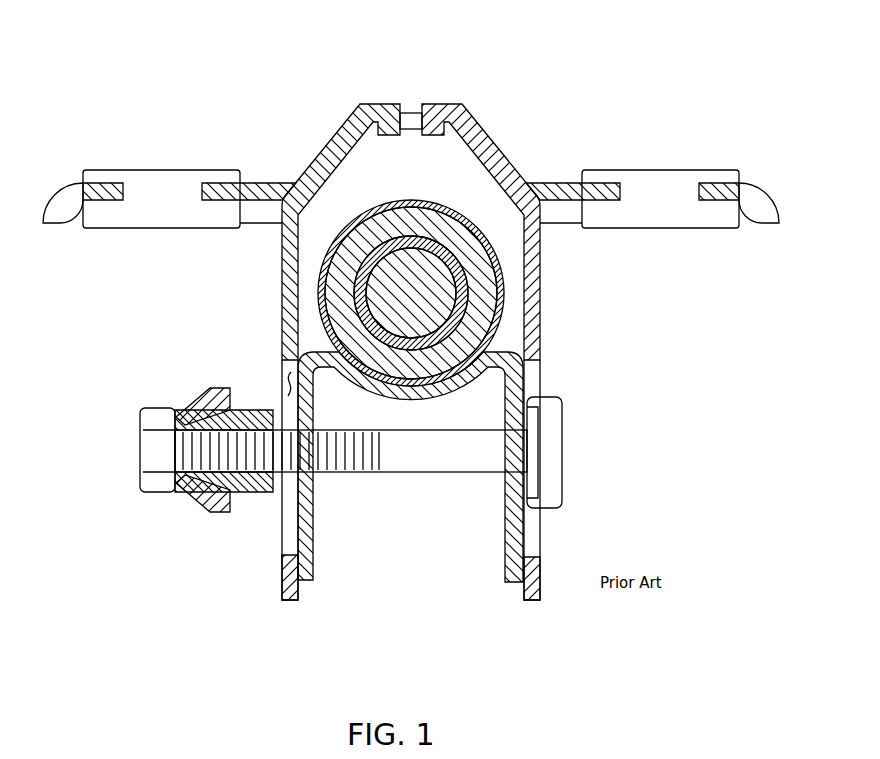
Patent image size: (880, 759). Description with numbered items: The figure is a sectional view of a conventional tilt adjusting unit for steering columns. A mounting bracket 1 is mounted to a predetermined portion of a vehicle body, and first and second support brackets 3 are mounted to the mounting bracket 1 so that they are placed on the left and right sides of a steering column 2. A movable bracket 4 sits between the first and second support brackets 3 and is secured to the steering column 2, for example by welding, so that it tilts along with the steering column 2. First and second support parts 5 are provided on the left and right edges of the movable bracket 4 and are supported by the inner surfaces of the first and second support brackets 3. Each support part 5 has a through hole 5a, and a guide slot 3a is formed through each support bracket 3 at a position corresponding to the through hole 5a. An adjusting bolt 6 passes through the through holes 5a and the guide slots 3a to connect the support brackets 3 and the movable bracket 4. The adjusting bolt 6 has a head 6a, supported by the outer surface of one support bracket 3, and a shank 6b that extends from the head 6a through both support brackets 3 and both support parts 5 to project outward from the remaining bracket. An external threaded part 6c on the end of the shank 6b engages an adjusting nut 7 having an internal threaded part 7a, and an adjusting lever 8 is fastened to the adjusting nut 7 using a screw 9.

The mounting bracket 1 is at (566, 186).
The steering column 2 is at (486, 283).
The first and second support brackets 3 is at (290, 300).
The guide slot 3a is at (287, 382).
The movable bracket 4 is at (463, 392).
The first and second support parts 5 is at (313, 535).
The through hole 5a is at (322, 476).
The adjusting bolt 6 is at (435, 454).
The head 6a is at (553, 441).
The shank 6b is at (460, 470).
The external threaded part 6c is at (318, 462).
The adjusting nut 7 is at (203, 500).
The internal threaded part 7a is at (240, 500).
The adjusting lever 8 is at (197, 405).
The screw 9 is at (147, 452).